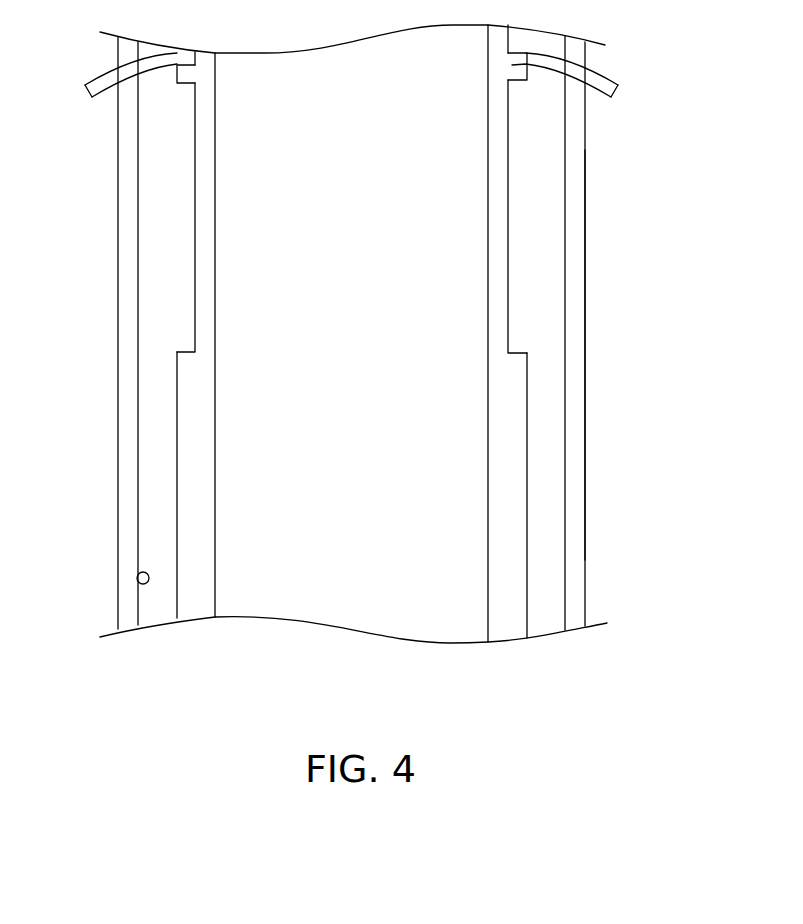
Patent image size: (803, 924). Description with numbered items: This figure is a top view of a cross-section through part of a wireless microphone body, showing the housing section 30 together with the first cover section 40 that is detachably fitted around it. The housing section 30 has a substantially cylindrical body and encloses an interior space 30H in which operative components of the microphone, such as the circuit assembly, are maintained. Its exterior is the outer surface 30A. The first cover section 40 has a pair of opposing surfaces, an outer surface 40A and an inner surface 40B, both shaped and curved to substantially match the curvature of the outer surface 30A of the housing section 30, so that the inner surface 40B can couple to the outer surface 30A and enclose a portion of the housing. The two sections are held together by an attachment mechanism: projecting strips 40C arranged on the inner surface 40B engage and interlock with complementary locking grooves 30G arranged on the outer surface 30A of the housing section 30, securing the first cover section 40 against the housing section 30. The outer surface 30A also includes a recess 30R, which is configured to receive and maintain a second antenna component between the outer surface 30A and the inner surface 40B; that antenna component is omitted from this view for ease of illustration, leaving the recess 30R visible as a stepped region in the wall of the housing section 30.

The housing section 30 is at (396, 86).
The outer surface 30A is at (528, 532).
The locking groove 30G is at (188, 54).
The interior space 30H is at (357, 458).
The recess 30R is at (195, 240).
The first cover section 40 is at (138, 295).
The outer surface 40A is at (586, 153).
The inner surface 40B is at (138, 588).
The projecting strip 40C is at (555, 78).